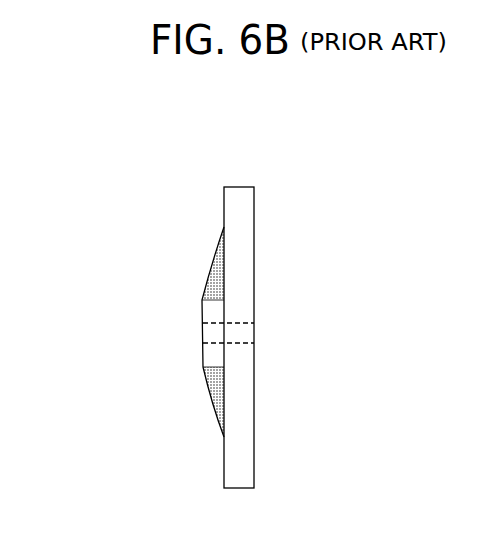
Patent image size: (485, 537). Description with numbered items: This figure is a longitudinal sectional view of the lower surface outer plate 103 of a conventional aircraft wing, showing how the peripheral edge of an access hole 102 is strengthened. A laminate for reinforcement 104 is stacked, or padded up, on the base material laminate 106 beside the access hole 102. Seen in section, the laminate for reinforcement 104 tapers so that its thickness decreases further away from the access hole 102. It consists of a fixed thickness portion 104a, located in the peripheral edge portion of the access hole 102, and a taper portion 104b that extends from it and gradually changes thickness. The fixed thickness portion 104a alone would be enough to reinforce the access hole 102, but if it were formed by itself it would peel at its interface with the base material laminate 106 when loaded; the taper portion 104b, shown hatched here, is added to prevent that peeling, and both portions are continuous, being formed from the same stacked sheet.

The conventional substrate structure 103 is at (194, 209).
The base material laminate 106 is at (240, 242).
The access hole 102 is at (212, 332).
The laminate for reinforcement 104 is at (100, 333).
The fixed thickness portion 104a is at (210, 357).
The taper portion 104b is at (207, 400).